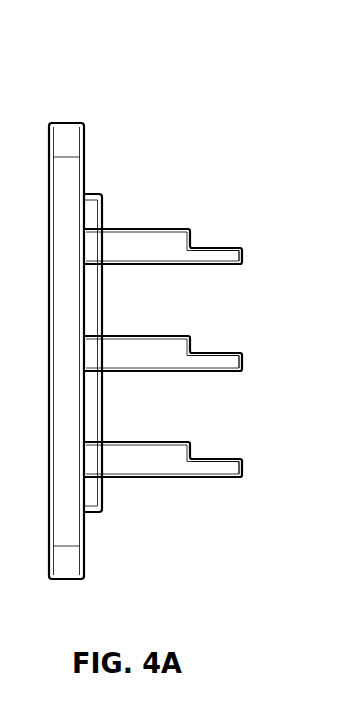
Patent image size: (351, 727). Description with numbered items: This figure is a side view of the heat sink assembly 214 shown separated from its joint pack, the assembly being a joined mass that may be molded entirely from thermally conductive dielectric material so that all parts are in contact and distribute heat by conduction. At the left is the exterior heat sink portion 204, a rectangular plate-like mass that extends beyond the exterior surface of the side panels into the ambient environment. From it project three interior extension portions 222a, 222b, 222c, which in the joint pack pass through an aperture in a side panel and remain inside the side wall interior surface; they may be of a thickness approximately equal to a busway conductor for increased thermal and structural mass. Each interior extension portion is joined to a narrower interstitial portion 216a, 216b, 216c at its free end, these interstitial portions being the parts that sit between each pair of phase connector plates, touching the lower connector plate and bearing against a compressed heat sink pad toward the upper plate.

The exterior heat sink portion 204 is at (66, 121).
The heat sink assembly 214 is at (185, 97).
The interior extension portion 222a is at (147, 242).
The interior extension portion 222b is at (148, 345).
The interior extension portion 222c is at (148, 452).
The interstitial portion 216a is at (233, 256).
The interstitial portion 216b is at (233, 363).
The interstitial portion 216c is at (233, 469).